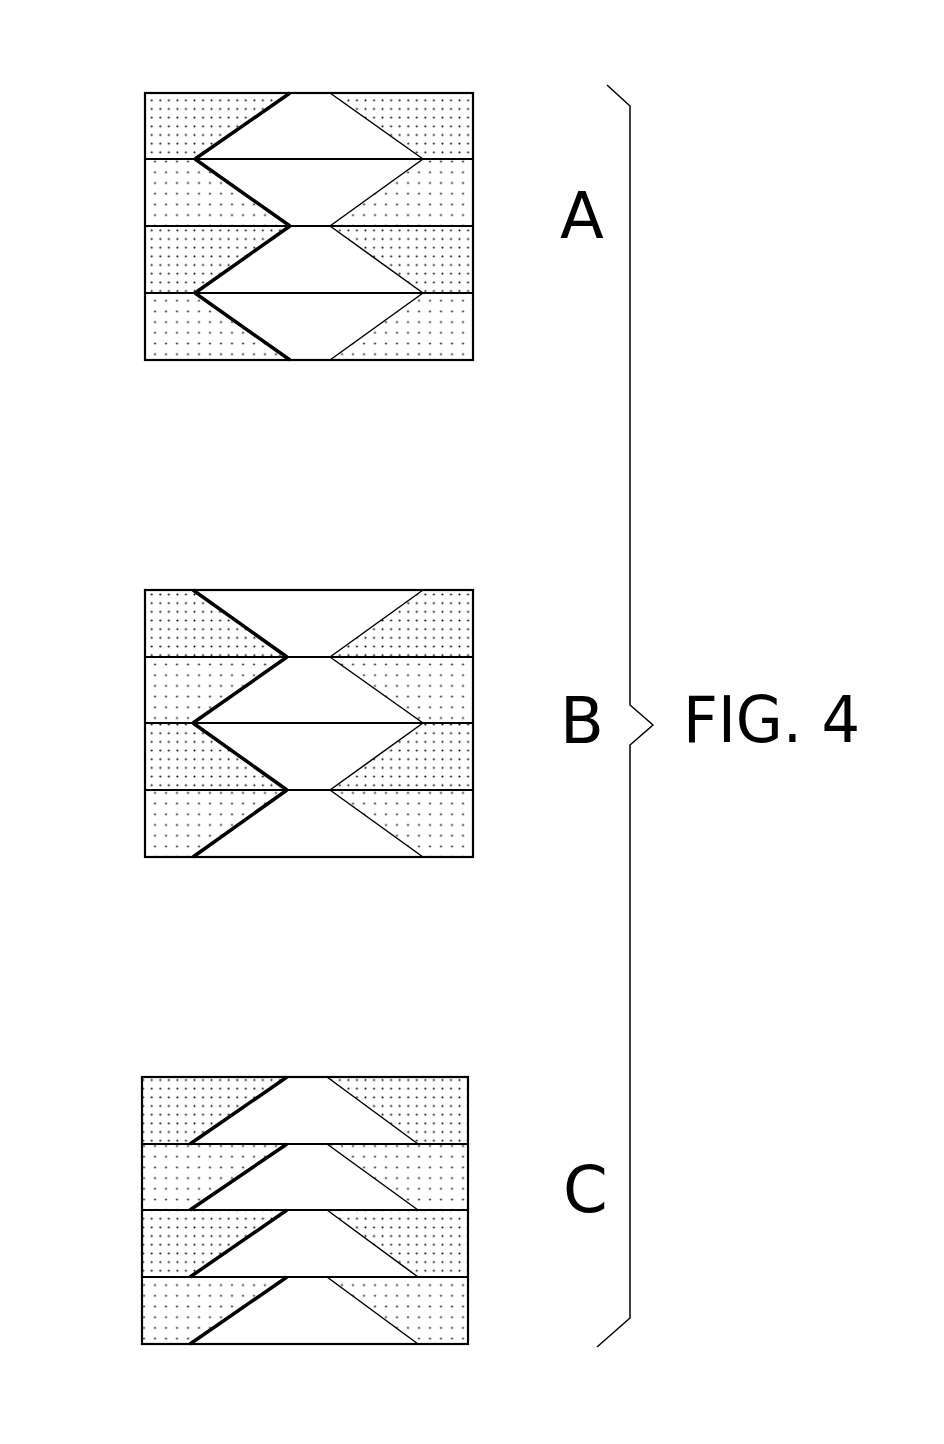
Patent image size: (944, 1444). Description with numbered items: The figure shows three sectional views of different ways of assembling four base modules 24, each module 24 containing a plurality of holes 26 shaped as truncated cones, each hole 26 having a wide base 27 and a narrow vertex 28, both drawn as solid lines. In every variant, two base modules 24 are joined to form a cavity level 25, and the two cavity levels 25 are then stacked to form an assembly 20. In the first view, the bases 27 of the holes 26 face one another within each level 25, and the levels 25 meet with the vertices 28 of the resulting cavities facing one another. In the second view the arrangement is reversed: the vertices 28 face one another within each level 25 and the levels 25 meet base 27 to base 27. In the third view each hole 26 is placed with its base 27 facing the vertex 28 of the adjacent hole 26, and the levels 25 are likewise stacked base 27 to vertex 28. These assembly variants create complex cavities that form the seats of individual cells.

In FIG. 4B, the laminated assembly 20 is at (307, 792).
In FIG. 4A, the base module 24 is at (160, 130).
In FIG. 4B, the base module 24 is at (160, 630).
In FIG. 4C, the base module 24 is at (163, 1112).
In FIG. 4A, the cavity level 25 is at (488, 360).
In FIG. 4B, the cavity level 25 is at (485, 857).
In FIG. 4C, the cavity level 25 is at (482, 1077).
In FIG. 4A, the hole 26 is at (303, 133).
In FIG. 4B, the hole 26 is at (257, 620).
In FIG. 4C, the hole 26 is at (325, 1100).
In FIG. 4A, the base 27 is at (230, 160).
In FIG. 4B, the base 27 is at (288, 722).
In FIG. 4C, the base 27 is at (250, 1147).
In FIG. 4A, the vertex 28 is at (323, 227).
In FIG. 4B, the vertex 28 is at (328, 657).
In FIG. 4C, the vertex 28 is at (310, 1145).